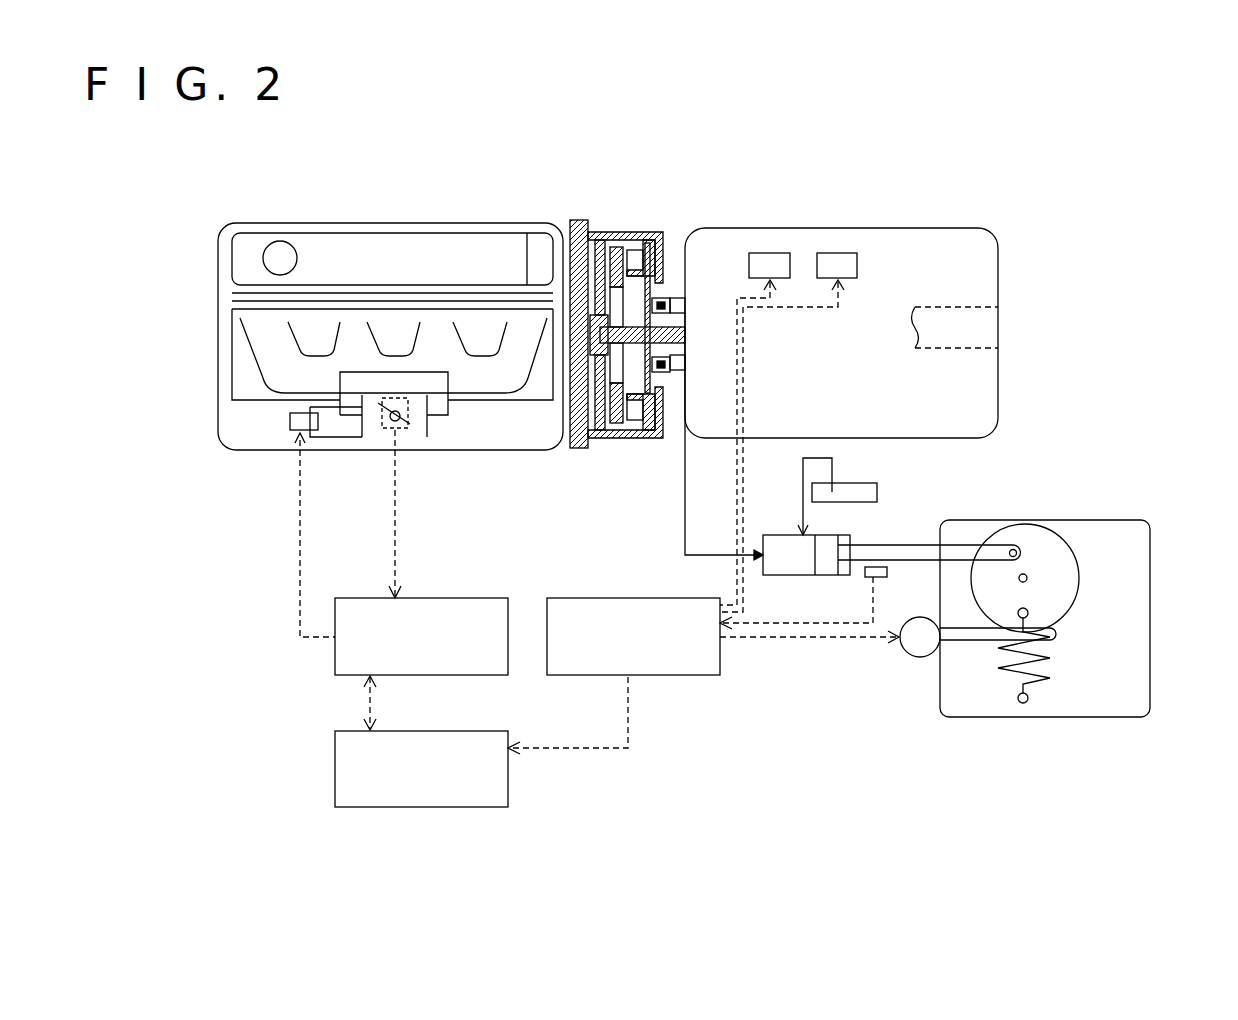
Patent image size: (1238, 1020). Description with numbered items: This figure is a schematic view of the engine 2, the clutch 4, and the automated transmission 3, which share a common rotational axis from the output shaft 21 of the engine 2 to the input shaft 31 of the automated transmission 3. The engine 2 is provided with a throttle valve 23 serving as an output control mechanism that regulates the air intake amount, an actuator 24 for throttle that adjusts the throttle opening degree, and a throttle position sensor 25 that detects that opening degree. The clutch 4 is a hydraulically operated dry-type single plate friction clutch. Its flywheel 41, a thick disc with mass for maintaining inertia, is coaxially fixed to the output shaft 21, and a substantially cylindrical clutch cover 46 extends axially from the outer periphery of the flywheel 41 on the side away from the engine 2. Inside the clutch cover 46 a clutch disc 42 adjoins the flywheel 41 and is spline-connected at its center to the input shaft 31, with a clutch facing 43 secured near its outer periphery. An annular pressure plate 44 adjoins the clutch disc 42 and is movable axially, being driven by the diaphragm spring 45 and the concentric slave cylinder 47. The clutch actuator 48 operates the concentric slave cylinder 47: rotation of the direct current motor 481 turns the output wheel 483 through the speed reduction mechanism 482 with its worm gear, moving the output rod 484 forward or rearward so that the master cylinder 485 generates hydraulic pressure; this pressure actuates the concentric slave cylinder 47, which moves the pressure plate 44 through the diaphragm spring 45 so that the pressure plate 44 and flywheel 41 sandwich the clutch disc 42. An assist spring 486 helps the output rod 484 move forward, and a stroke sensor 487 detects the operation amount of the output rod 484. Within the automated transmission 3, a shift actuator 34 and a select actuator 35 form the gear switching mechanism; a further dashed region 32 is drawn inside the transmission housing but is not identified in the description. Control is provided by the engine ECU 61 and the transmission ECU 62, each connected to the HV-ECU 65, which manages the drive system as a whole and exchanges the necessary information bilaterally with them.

The engine 2 is at (431, 195).
The output shaft 21 is at (556, 300).
The throttle valve 23 is at (378, 403).
The actuator for throttle 24 is at (335, 438).
The throttle position sensor 25 is at (378, 434).
The automated transmission 3 is at (1030, 187).
The input shaft 31 is at (688, 322).
The gear mechanism 32 is at (972, 328).
The shift actuator 34 is at (770, 258).
The select actuator 35 is at (837, 258).
The clutch 4 is at (653, 186).
The flywheel 41 is at (580, 448).
The clutch disc 42 is at (592, 450).
The clutch facing 43 is at (592, 225).
The pressure plate 44 is at (614, 438).
The diaphragm spring 45 is at (674, 298).
The clutch cover 46 is at (645, 440).
The concentric slave cylinder 47 is at (683, 420).
The clutch actuator 48 is at (1119, 510).
The direct current motor 481 is at (902, 653).
The speed reduction mechanism 482 is at (967, 640).
The output wheel 483 is at (1065, 580).
The output rod 484 is at (905, 545).
The master cylinder 485 is at (781, 535).
The assist spring 486 is at (1048, 658).
The stroke sensor 487 is at (882, 545).
The engine electronic control unit 61 is at (485, 598).
The transmission electronic control unit 62 is at (580, 600).
The hybrid vehicle electronic control unit 65 is at (485, 807).